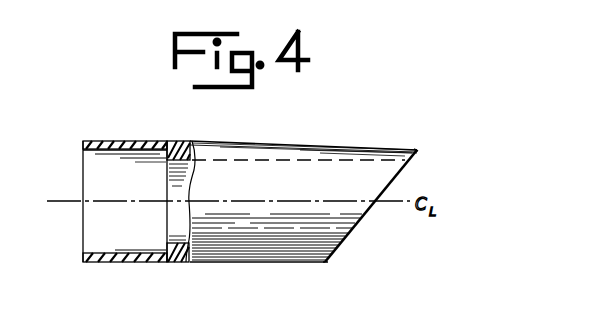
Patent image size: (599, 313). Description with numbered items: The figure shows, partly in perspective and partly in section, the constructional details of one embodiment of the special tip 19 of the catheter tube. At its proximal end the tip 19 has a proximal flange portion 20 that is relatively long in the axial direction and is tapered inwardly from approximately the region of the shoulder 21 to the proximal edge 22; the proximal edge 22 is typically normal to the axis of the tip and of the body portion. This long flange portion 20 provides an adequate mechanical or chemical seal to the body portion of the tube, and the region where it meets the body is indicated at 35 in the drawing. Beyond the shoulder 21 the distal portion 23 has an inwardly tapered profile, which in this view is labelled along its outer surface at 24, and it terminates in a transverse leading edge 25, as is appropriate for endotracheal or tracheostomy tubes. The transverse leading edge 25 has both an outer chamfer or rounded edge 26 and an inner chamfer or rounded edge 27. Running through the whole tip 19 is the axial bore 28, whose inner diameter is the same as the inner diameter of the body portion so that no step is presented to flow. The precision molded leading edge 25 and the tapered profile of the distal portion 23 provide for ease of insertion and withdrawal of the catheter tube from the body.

The tip 19 is at (341, 124).
The proximal flange portion 20 is at (113, 141).
The shoulder 21 is at (168, 151).
The proximal edge 22 is at (83, 162).
The distal portion 23 is at (242, 152).
The tubular body end portion 24 is at (370, 143).
The transverse leading edge 25 is at (362, 217).
The outer chamfer or rounded edge 26 is at (419, 150).
The inner chamfer or rounded edge 27 is at (408, 164).
The axial bore 28 is at (173, 246).
The plug / connector wall 35 is at (169, 141).